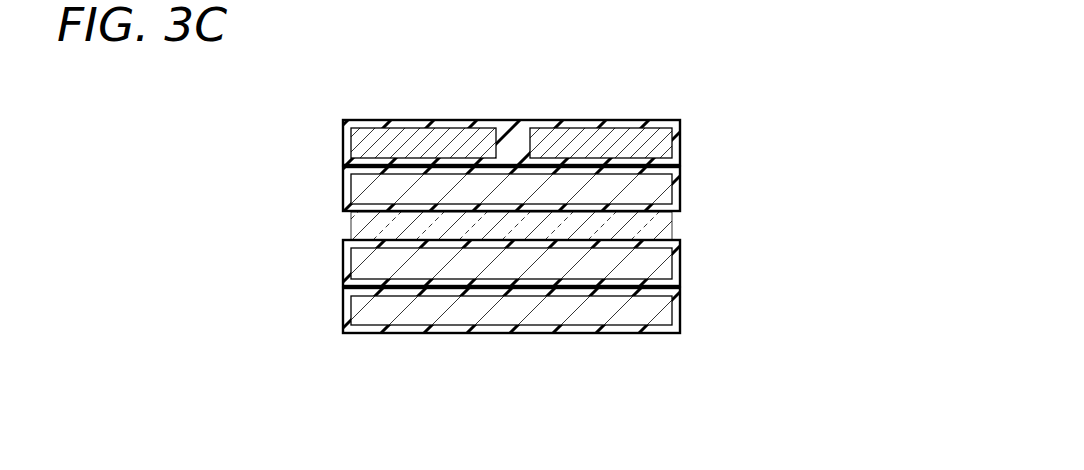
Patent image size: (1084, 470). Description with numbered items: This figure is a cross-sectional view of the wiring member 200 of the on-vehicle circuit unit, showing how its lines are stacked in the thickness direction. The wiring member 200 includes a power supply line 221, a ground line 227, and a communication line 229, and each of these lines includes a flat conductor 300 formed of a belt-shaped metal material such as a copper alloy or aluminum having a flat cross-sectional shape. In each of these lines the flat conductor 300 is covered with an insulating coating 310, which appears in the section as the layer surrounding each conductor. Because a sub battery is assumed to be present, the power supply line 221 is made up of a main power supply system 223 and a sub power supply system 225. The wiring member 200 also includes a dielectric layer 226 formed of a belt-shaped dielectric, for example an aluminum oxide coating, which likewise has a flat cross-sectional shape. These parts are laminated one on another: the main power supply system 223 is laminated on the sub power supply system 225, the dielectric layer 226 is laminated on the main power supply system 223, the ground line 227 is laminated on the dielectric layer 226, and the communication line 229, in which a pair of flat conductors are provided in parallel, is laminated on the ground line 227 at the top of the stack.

The wiring member 200 is at (636, 93).
The power supply line 221 is at (793, 247).
The main power supply system 223 is at (675, 262).
The sub power supply system 225 is at (675, 310).
The dielectric layer 226 is at (662, 231).
The ground line 227 is at (674, 189).
The communication line 229 is at (678, 146).
The flat conductor 300 is at (360, 143).
The insulating coating 310 is at (413, 168).